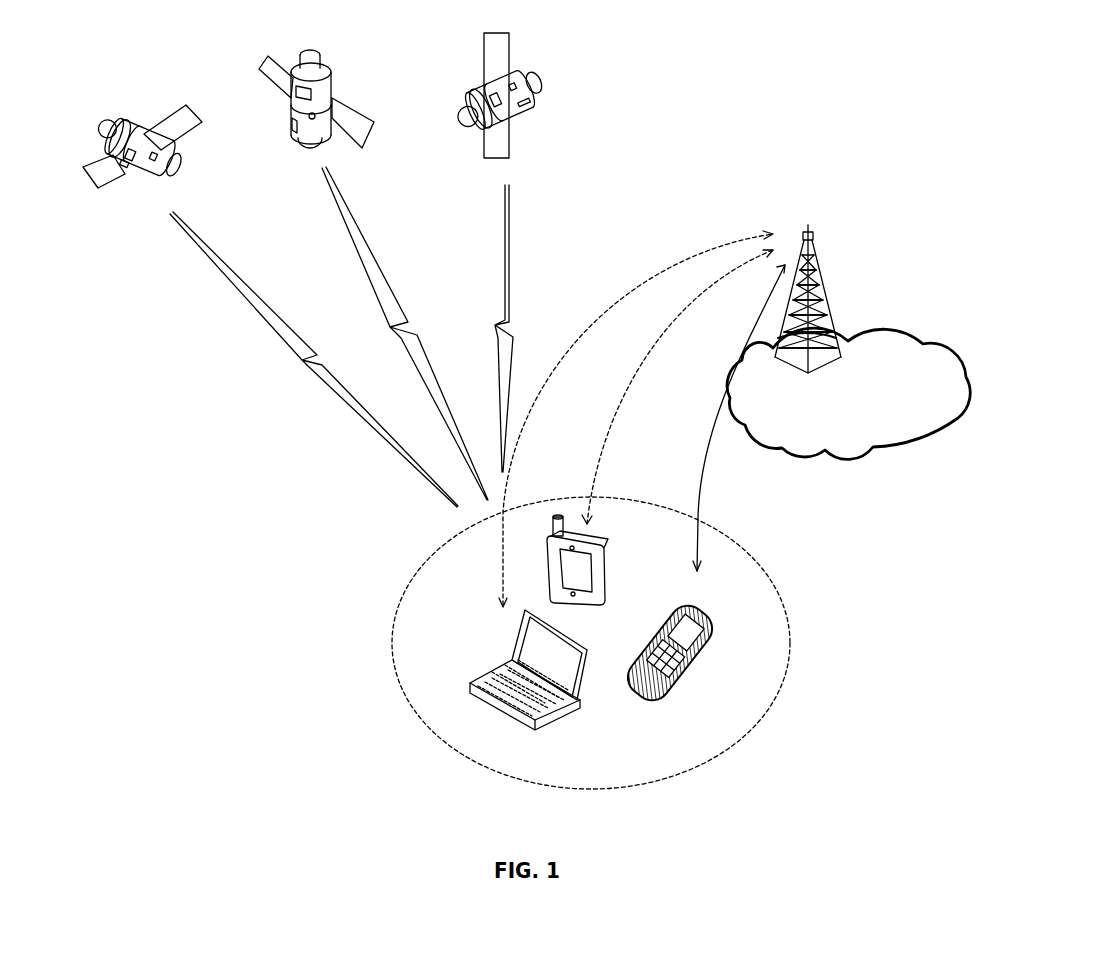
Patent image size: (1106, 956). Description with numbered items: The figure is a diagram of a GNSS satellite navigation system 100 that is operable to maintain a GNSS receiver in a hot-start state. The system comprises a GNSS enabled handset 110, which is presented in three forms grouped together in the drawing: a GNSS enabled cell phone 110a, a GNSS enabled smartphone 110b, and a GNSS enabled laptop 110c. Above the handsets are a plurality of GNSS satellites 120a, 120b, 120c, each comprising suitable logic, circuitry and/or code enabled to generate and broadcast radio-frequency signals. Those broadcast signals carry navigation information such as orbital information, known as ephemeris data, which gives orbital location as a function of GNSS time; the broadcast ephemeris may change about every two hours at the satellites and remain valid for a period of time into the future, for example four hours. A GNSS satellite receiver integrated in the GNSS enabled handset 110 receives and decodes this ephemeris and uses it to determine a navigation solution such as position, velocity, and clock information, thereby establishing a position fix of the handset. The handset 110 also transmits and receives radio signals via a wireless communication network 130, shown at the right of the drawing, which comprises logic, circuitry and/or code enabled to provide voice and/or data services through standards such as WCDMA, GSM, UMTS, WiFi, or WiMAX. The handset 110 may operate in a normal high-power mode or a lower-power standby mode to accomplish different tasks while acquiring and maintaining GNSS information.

The GNSS satellite navigation system 100 is at (989, 136).
The GNSS enabled handset 110 is at (454, 552).
The GNSS enabled cell phone 110a is at (742, 624).
The GNSS enabled smartphone 110b is at (631, 556).
The GNSS enabled laptop 110c is at (599, 632).
The GNSS satellite 120a is at (125, 118).
The GNSS satellite 120b is at (372, 64).
The GNSS satellite 120c is at (548, 78).
The wireless communication network 130 is at (930, 338).